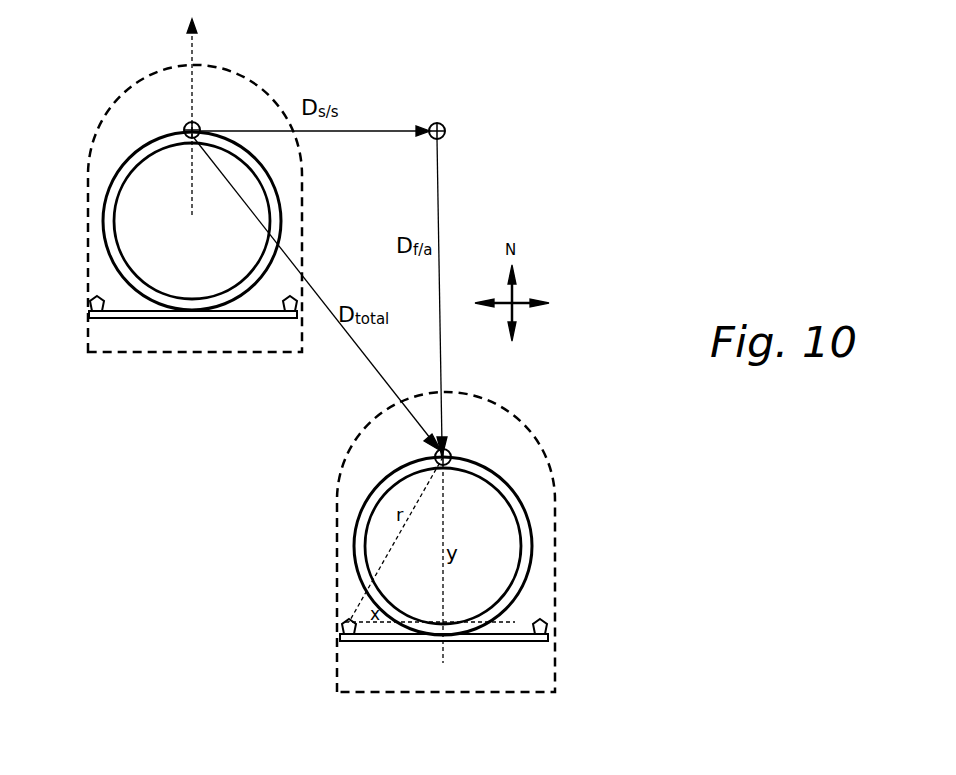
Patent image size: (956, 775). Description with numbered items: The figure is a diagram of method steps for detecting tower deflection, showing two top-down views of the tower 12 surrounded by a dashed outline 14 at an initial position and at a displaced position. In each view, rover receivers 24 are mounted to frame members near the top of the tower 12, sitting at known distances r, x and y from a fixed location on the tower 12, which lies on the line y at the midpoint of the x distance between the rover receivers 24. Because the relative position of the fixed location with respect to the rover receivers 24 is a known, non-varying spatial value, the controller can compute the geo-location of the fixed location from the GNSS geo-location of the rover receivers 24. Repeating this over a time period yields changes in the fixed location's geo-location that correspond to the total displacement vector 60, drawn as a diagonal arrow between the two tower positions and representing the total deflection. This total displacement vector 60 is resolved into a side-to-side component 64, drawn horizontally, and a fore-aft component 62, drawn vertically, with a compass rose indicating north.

The tower 12 is at (268, 170).
The housing 14 is at (122, 104).
The rover receiver 24 is at (90, 300).
The total displacement vector 60 is at (366, 368).
The fore-aft component 62 is at (440, 237).
The side-to-side component 64 is at (358, 130).